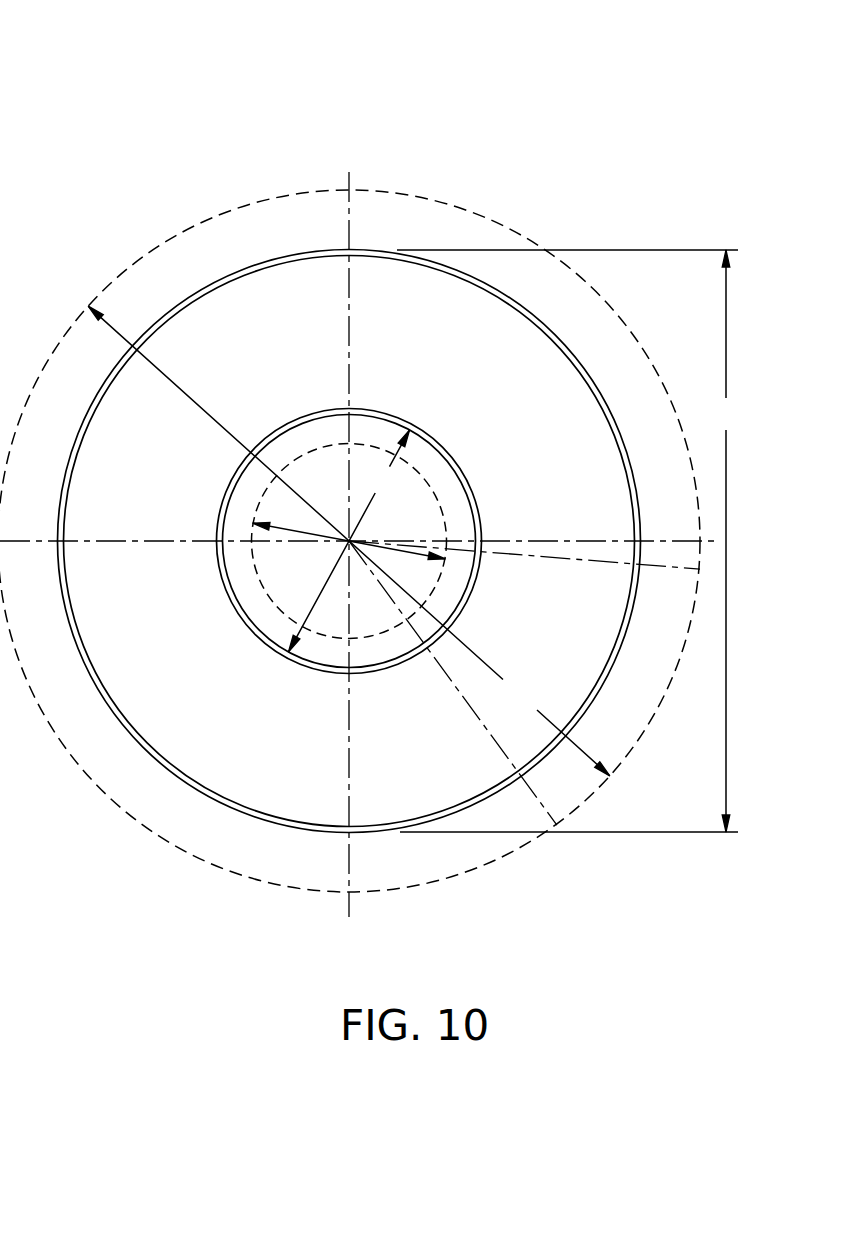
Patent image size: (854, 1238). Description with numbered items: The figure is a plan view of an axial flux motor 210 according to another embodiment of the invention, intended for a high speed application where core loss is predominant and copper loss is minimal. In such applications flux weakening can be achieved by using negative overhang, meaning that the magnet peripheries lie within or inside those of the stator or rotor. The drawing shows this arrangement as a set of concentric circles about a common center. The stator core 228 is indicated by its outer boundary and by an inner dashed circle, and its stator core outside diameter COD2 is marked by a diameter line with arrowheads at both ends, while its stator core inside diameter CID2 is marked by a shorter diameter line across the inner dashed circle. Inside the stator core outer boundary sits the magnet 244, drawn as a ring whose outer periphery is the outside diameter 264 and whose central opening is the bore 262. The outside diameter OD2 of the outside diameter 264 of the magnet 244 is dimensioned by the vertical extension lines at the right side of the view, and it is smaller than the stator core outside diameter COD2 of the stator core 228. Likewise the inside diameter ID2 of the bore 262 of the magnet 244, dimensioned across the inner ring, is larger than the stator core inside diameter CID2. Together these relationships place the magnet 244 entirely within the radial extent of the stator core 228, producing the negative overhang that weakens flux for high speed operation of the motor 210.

The motor 210 is at (183, 92).
The magnet 244 is at (178, 167).
The outside diameter 264 is at (310, 253).
The bore 262 is at (258, 624).
The stator core 228 is at (528, 788).
The outside diameter of magnet OD2 is at (573, 541).
The inside diameter of bore ID2 is at (348, 541).
The stator core inside diameter CID2 is at (377, 545).
The stator core outside diameter COD2 is at (349, 541).